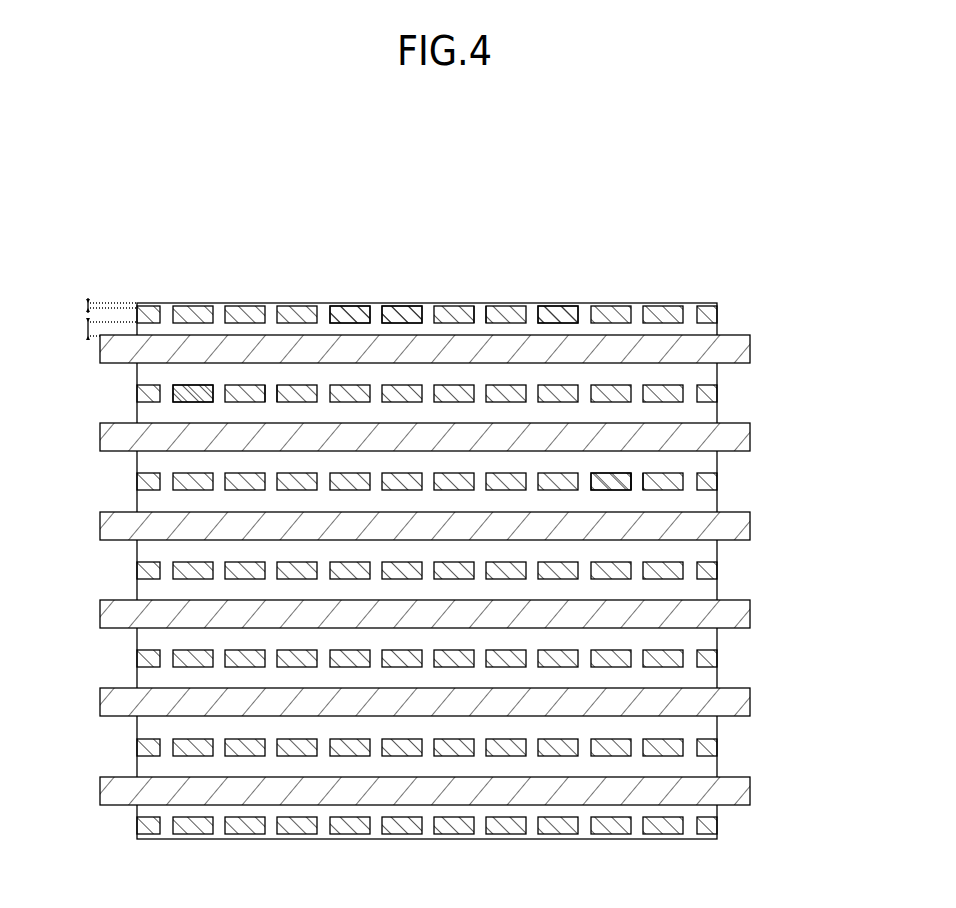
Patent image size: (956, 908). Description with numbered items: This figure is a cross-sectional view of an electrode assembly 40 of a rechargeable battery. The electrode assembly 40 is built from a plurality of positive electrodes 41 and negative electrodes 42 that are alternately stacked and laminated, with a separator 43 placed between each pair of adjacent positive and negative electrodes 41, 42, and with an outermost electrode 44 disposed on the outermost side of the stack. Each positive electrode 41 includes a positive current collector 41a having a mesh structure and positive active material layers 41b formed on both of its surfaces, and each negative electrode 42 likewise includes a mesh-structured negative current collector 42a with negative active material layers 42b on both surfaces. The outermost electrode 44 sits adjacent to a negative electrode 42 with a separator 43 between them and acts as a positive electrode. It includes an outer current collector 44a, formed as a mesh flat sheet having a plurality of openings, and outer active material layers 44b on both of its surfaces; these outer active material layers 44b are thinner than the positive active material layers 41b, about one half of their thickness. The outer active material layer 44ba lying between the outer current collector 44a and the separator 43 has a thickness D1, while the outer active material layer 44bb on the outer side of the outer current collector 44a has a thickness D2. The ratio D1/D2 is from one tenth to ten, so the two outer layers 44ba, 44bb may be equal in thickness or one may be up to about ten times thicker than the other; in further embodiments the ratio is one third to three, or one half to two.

The electrode assembly 40 is at (468, 156).
The positive electrode 41 is at (746, 483).
The positive current collector 41a is at (603, 480).
The positive active material layer 41b is at (660, 462).
The negative electrode 42 is at (746, 395).
The negative current collector 42a is at (192, 393).
The negative active material layer 42b is at (268, 373).
The separator 43 is at (748, 347).
The outermost electrode 44 is at (746, 311).
The outer current collector 44a is at (546, 310).
The outer active material layer 44b is at (480, 315).
The outer active material layer 44ba is at (348, 320).
The outer active material layer 44bb is at (408, 303).
The thickness of outer active material layer between collector and separator D1 is at (94, 328).
The thickness of outer active material layer on outer side D2 is at (94, 298).